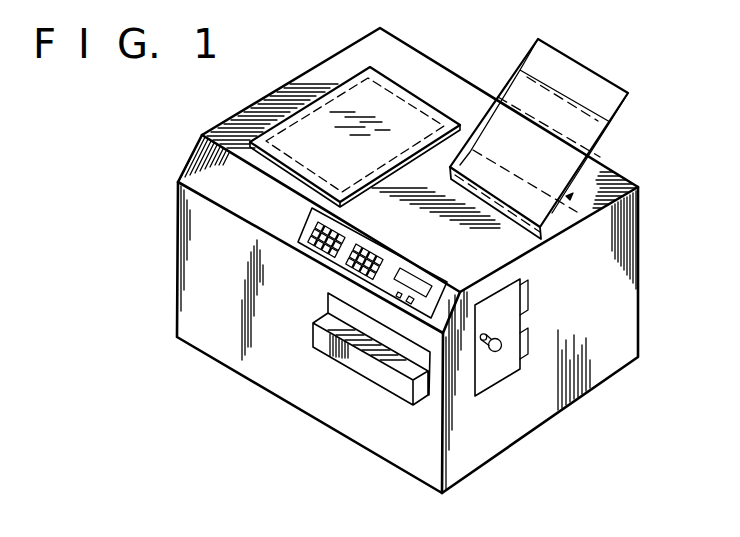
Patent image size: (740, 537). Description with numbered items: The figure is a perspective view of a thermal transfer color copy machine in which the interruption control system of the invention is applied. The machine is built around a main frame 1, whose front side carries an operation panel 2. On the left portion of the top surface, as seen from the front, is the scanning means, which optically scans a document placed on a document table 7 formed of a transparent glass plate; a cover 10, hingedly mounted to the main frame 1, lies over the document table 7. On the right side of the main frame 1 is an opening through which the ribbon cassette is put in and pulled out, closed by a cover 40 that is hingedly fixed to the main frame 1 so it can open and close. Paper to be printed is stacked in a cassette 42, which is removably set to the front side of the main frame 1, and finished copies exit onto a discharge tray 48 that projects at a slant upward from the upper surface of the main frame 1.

The main frame 1 is at (603, 368).
The operation panel 2 is at (308, 230).
The document table 7 is at (270, 138).
The cover 10 is at (342, 88).
The cover 40 is at (503, 372).
The cassette 42 is at (368, 370).
The discharge tray 48 is at (597, 85).